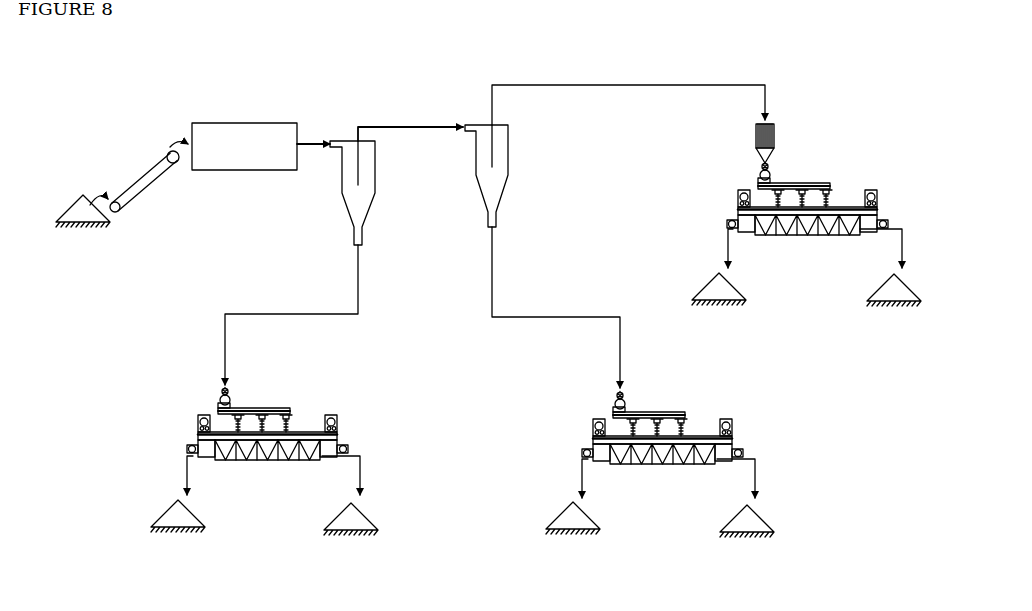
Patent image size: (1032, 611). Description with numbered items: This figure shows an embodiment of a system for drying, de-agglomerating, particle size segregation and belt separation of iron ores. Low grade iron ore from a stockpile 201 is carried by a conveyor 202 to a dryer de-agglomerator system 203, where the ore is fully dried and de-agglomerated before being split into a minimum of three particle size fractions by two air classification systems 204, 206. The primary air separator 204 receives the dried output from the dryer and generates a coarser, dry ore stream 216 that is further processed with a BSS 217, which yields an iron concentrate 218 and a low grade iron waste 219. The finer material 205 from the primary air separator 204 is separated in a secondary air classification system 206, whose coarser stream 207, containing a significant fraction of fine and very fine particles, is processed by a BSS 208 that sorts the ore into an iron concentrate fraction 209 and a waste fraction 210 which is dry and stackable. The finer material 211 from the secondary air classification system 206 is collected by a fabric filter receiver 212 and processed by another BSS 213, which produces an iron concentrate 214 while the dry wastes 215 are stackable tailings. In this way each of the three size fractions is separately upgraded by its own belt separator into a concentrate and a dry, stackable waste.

The low grade iron feed stockpile 201 is at (68, 199).
The conveyor 202 is at (138, 178).
The dryer de-agglomerator system 203 is at (235, 121).
The primary air separator 204 is at (342, 139).
The finer material 205 is at (407, 125).
The secondary air classification system 206 is at (475, 122).
The coarser stream 207 is at (494, 273).
The BSS 208 is at (677, 406).
The iron concentrate fraction 209 is at (767, 516).
The waste fraction 210 is at (560, 507).
The finer material 211 is at (627, 83).
The fabric filter receiver 212 is at (774, 124).
The BSS 213 is at (823, 178).
The iron concentrate stockpile 214 is at (913, 290).
The dry wastes 215 is at (705, 278).
The coarser dry ore stream 216 is at (363, 287).
The BSS 217 is at (282, 407).
The iron concentrate stockpile 218 is at (371, 516).
The low grade iron stockpile 219 is at (165, 505).